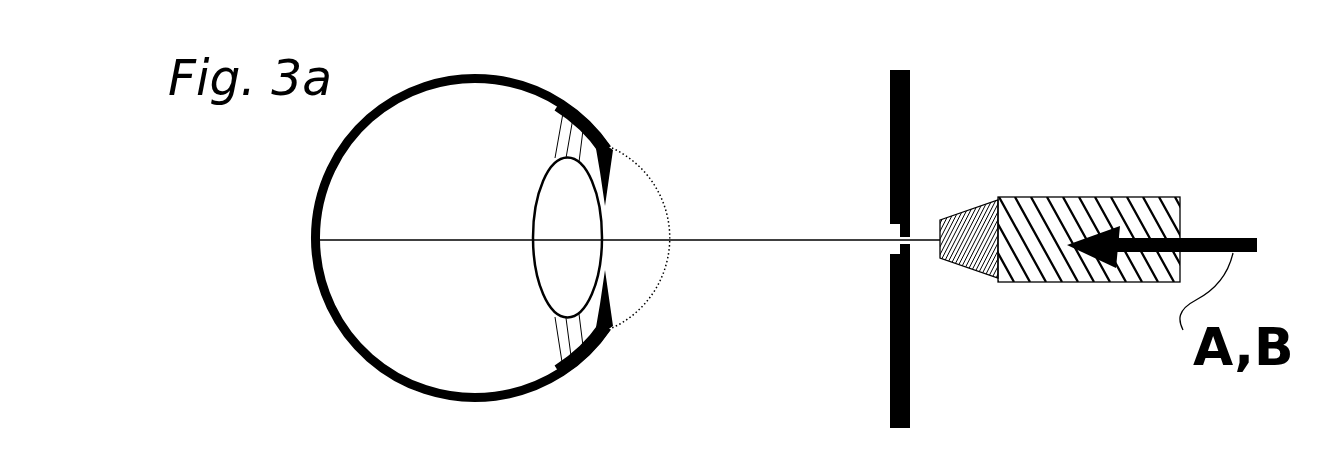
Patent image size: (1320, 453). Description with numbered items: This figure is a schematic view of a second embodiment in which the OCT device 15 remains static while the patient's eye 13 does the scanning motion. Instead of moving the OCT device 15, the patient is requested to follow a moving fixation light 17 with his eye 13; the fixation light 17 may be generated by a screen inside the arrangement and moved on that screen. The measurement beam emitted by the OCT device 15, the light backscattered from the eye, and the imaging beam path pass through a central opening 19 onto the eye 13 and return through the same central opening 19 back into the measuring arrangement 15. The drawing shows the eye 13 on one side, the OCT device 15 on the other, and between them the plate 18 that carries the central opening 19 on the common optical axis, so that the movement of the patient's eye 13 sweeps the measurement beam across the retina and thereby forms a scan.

The eye 13 is at (547, 97).
The OCT device 15 is at (1060, 217).
The fixation light 17 is at (890, 243).
The aperture plate 18 is at (910, 88).
The central opening 19 is at (915, 243).